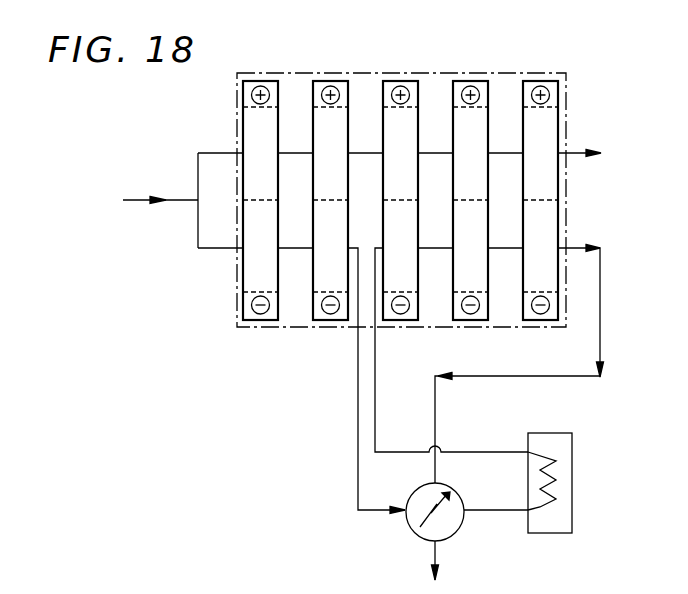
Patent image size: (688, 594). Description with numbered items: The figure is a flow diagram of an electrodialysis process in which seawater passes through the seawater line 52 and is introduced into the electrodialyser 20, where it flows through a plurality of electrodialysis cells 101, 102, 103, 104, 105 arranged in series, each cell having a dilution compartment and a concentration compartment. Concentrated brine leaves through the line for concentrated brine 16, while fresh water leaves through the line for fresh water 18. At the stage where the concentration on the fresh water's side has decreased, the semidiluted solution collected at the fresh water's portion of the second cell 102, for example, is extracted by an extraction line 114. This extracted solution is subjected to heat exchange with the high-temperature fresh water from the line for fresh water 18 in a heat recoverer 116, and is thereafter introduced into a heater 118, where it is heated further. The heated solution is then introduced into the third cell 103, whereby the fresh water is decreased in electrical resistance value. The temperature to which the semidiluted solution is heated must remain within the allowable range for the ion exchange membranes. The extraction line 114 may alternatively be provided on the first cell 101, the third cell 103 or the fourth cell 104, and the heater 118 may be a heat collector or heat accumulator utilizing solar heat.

The electrodialyser 20 is at (490, 72).
The seawater line 52 is at (172, 200).
The line for concentrated brine 16 is at (577, 153).
The line for fresh water 18 is at (573, 249).
The first electrodialysis cell 101 is at (260, 316).
The second cell 102 is at (330, 316).
The third cell 103 is at (400, 316).
The fourth electrodialysis cell 104 is at (470, 316).
The fifth electrodialysis cell 105 is at (538, 316).
The extraction line 114 is at (358, 400).
The heat recoverer 116 is at (458, 530).
The heater 118 is at (572, 486).